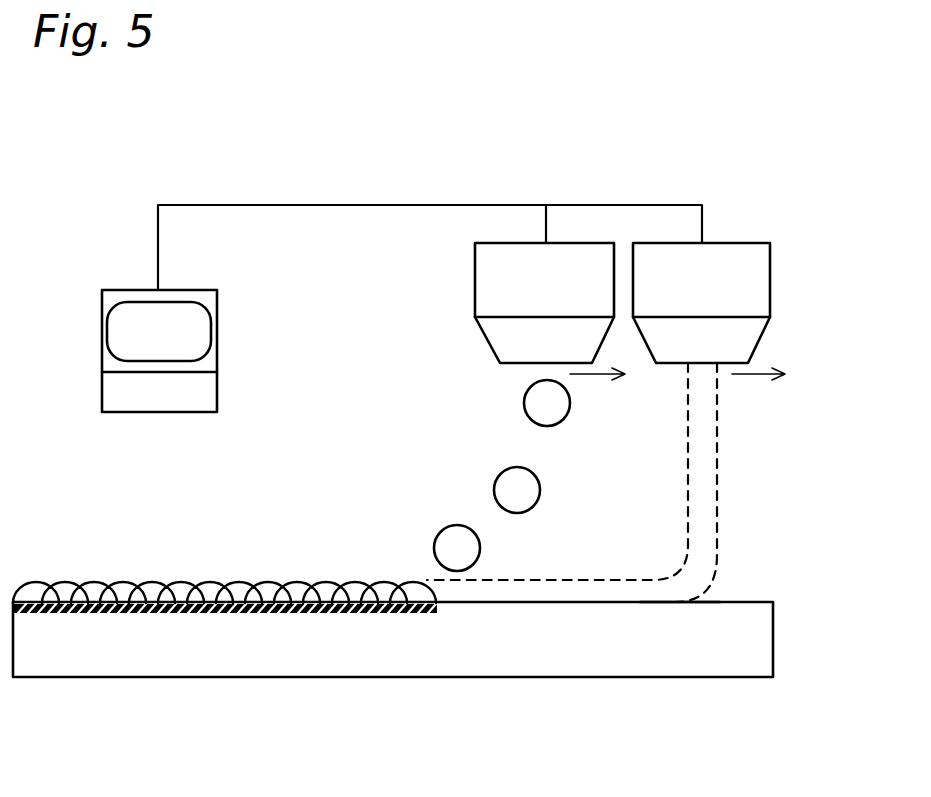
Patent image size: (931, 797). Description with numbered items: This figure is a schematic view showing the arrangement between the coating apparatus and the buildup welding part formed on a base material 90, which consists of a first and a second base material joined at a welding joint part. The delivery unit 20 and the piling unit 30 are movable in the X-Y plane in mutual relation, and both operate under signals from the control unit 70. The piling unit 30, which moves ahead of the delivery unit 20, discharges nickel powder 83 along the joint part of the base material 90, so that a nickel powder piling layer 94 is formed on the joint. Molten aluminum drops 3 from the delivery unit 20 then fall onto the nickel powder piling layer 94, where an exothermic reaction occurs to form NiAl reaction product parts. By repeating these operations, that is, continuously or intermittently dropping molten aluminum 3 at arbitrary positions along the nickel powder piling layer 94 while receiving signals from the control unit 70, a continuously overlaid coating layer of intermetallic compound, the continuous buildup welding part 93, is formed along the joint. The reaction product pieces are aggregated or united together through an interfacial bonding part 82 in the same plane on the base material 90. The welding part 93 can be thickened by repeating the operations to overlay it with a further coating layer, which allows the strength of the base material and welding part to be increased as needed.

The molten aluminum drops 3 is at (505, 470).
The delivery unit 20 is at (472, 271).
The piling unit 30 is at (738, 242).
The control unit 70 is at (122, 290).
The interfacial bonding part 82 is at (240, 613).
The nickel powder 83 is at (708, 497).
The base material 90 is at (472, 657).
The continuous buildup welding part 93 is at (124, 582).
The nickel powder piling layer 94 is at (652, 593).